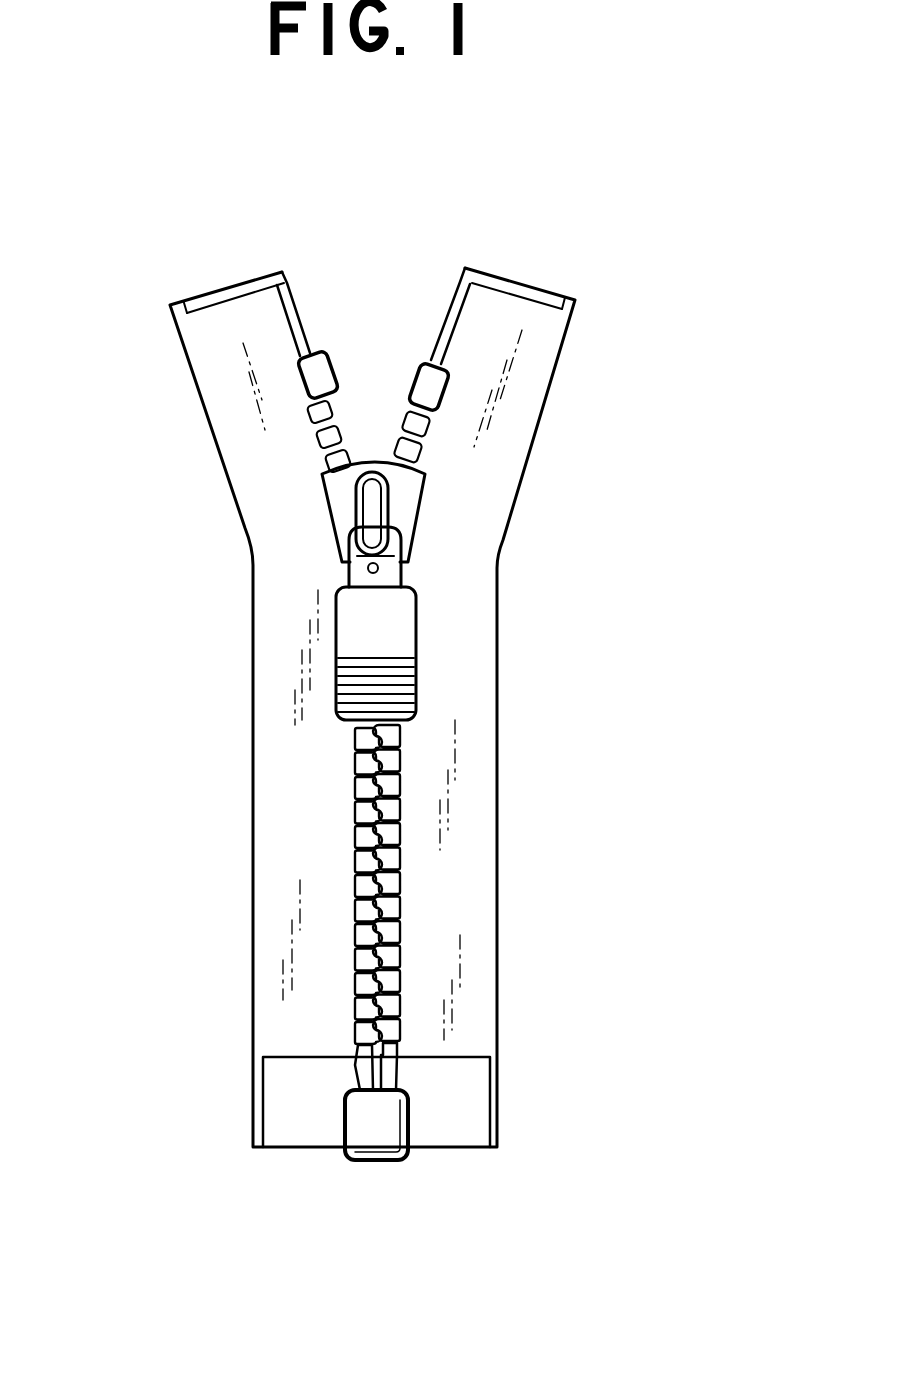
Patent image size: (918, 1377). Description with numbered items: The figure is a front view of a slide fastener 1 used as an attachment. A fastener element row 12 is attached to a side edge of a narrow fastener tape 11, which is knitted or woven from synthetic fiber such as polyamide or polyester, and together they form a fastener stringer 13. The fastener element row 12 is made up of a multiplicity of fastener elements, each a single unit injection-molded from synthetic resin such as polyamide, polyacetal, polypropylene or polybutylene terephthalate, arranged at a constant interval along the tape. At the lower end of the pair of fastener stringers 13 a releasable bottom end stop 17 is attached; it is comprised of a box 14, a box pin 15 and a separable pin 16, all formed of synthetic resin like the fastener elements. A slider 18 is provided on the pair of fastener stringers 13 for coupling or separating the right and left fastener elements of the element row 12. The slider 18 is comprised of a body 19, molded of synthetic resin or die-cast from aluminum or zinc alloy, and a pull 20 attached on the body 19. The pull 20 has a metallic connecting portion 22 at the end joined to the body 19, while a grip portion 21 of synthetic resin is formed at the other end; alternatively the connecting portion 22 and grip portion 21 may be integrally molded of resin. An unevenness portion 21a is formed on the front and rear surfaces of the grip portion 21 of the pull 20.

The slide fastener 1 is at (384, 339).
The fastener tape 11 is at (247, 330).
The fastener element row 12 is at (402, 790).
The fastener stringer 13 is at (198, 425).
The box 14 is at (378, 1137).
The box pin 15 is at (390, 1075).
The separable pin 16 is at (367, 1075).
The releasable bottom end stop 17 is at (408, 1178).
The slider 18 is at (436, 505).
The body 19 is at (343, 494).
The pull 20 is at (337, 608).
The grip portion 21 is at (392, 641).
The unevenness portion 21a is at (410, 684).
The connecting portion 22 is at (407, 573).